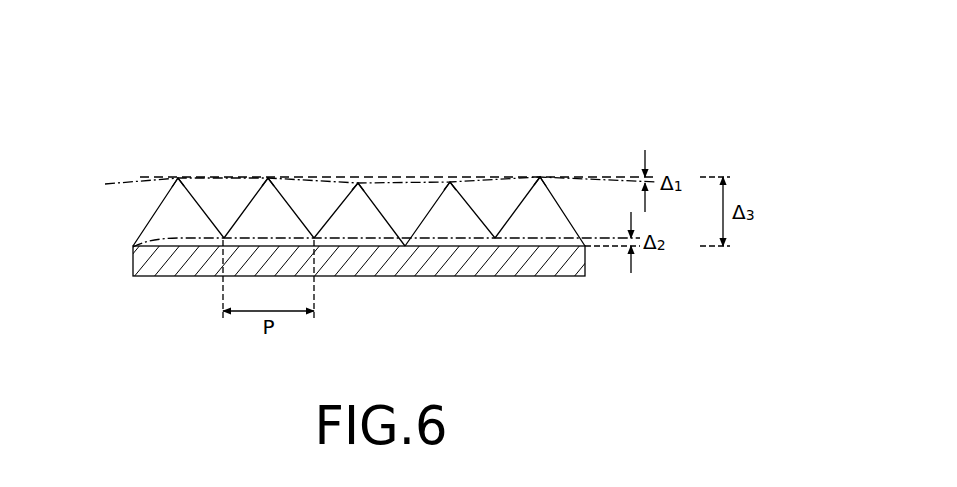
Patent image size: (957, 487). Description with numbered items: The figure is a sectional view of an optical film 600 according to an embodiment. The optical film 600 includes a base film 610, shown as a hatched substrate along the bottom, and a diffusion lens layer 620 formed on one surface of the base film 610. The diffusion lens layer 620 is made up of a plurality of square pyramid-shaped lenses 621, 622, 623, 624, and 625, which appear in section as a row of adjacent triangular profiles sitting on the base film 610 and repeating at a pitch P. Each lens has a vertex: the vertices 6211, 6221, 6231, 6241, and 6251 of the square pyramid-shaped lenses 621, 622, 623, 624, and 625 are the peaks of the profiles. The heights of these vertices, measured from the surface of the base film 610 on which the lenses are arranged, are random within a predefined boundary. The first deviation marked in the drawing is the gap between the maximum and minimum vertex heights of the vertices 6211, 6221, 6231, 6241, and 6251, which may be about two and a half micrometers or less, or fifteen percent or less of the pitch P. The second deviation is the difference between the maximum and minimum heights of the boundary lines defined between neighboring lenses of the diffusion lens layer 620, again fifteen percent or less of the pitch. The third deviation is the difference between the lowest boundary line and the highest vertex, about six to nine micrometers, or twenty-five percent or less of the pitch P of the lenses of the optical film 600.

The optical film 600 is at (359, 40).
The base film 610 is at (142, 252).
The diffusion lens layer 620 is at (325, 166).
The square pyramid-shaped lens 621 is at (142, 203).
The square pyramid-shaped lens 622 is at (230, 188).
The square pyramid-shaped lens 623 is at (333, 222).
The square pyramid-shaped lens 624 is at (425, 221).
The square pyramid-shaped lens 625 is at (517, 207).
The vertex 6211 is at (178, 178).
The vertex 6221 is at (268, 178).
The vertex 6231 is at (358, 183).
The vertex 6241 is at (450, 182).
The vertex 6251 is at (540, 177).